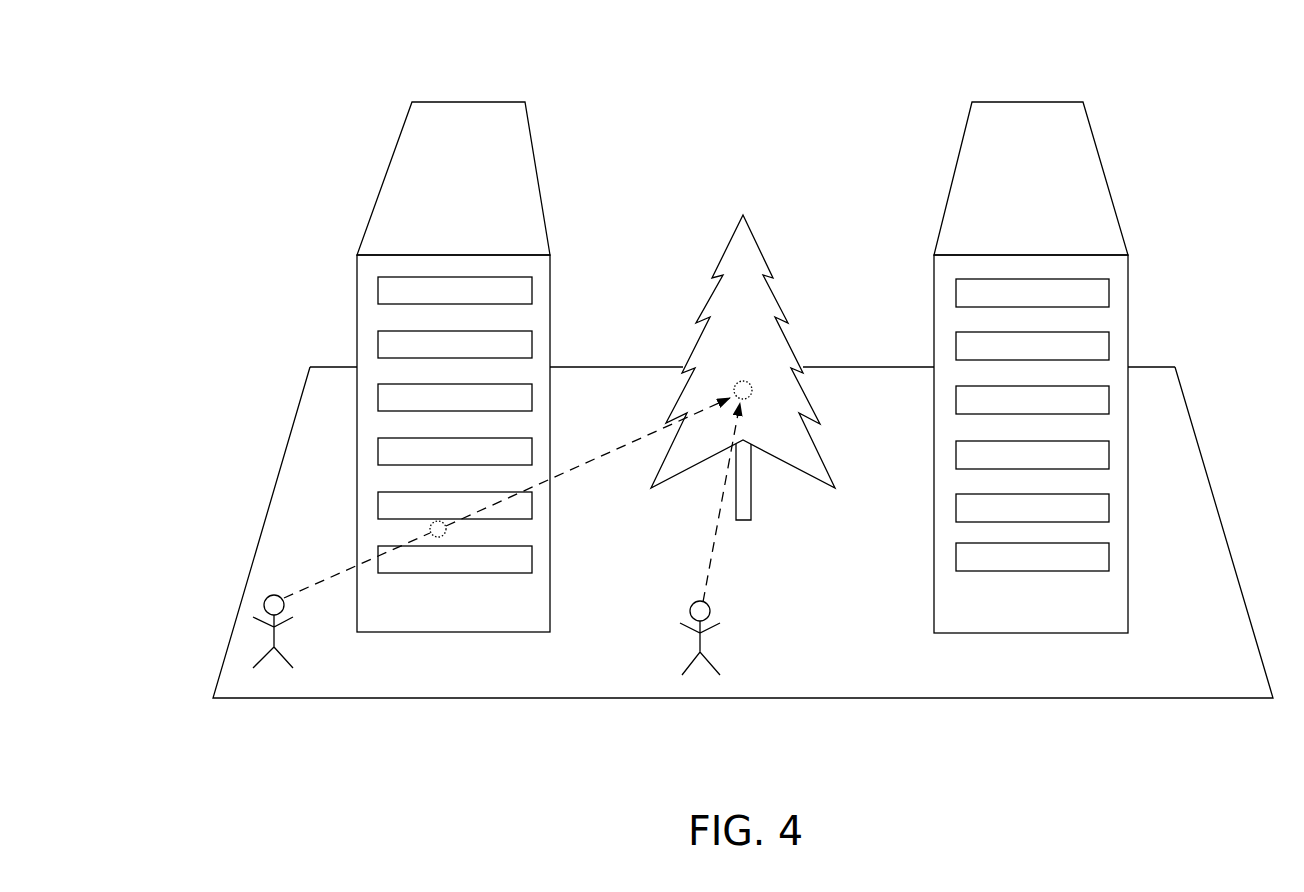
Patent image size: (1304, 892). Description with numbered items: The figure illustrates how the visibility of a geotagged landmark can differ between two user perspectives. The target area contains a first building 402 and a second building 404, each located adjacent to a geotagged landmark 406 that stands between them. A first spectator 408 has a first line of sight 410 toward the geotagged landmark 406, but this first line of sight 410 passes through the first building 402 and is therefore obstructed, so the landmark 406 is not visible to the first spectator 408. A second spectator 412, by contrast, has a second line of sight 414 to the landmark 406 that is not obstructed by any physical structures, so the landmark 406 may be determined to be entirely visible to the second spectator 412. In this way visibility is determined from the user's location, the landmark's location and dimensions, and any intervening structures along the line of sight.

The first building 402 is at (465, 102).
The second building 404 is at (1025, 102).
The geotagged landmark 406 is at (738, 228).
The first spectator 408 is at (278, 673).
The first line of sight 410 is at (595, 458).
The second spectator 412 is at (703, 678).
The second line of sight 414 is at (712, 550).